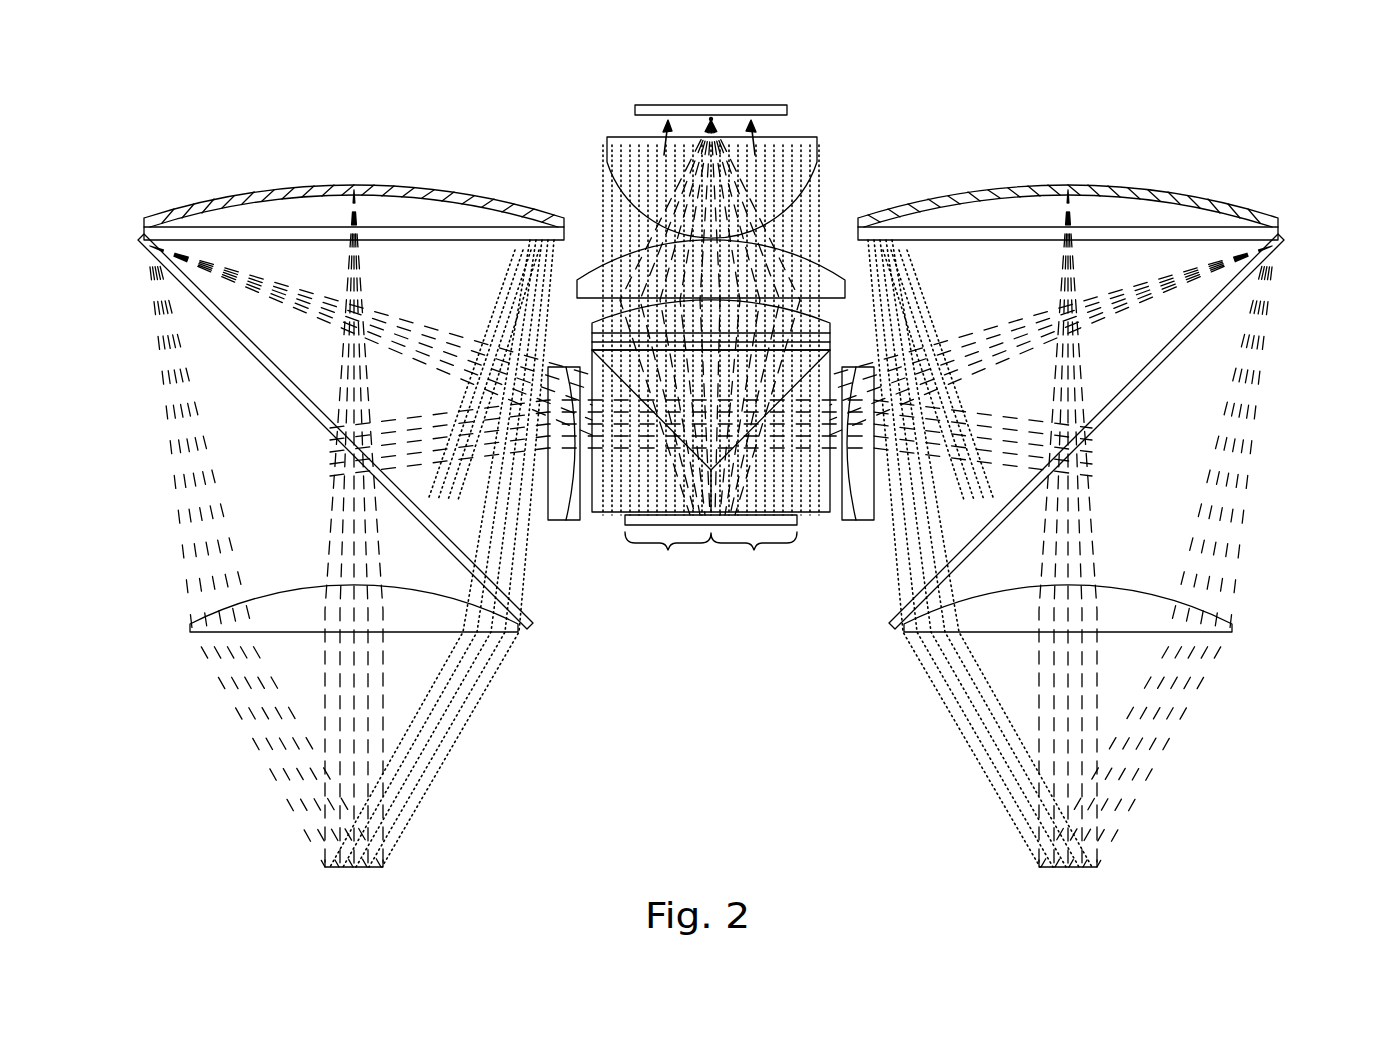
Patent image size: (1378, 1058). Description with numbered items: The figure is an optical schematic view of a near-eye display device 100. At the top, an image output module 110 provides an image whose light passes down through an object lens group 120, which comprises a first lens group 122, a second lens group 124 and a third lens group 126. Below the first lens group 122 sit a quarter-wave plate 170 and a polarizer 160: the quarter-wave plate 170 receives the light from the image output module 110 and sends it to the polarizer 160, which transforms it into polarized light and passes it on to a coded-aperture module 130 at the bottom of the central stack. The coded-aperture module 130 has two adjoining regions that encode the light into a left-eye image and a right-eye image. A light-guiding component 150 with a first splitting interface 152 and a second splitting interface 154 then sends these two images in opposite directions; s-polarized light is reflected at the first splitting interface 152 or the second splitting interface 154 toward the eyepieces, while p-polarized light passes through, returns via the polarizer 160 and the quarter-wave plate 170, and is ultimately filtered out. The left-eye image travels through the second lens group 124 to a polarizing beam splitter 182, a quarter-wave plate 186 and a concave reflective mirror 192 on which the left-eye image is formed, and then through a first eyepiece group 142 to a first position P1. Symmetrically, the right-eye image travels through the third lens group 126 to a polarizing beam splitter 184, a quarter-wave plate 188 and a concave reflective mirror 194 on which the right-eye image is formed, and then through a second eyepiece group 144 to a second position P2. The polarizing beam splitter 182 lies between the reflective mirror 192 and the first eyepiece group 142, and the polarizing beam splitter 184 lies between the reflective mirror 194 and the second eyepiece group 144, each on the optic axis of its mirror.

The near-eye display device 100 is at (80, 45).
The image output module 110 is at (790, 108).
The object lens group 120 is at (488, 38).
The first lens group 122 is at (600, 217).
The second lens group 124 is at (580, 367).
The third lens group 126 is at (836, 378).
The coded-aperture module 130 is at (798, 526).
The first eyepiece group 142 is at (283, 607).
The second eyepiece group 144 is at (1139, 607).
The light-guiding component 150 is at (695, 483).
The first splitting interface 152 is at (630, 500).
The second splitting interface 154 is at (810, 500).
The polarizer 160 is at (830, 347).
The quarter-wave plate 170 is at (830, 333).
The polarizing beam splitter 182 is at (285, 385).
The polarizing beam splitter 184 is at (1137, 383).
The quarter-wave plate 186 is at (255, 232).
The quarter-wave plate 188 is at (1168, 232).
The reflective mirror 192 is at (290, 197).
The reflective mirror 194 is at (1117, 190).
The first position P1 is at (378, 869).
The second position P2 is at (1088, 873).